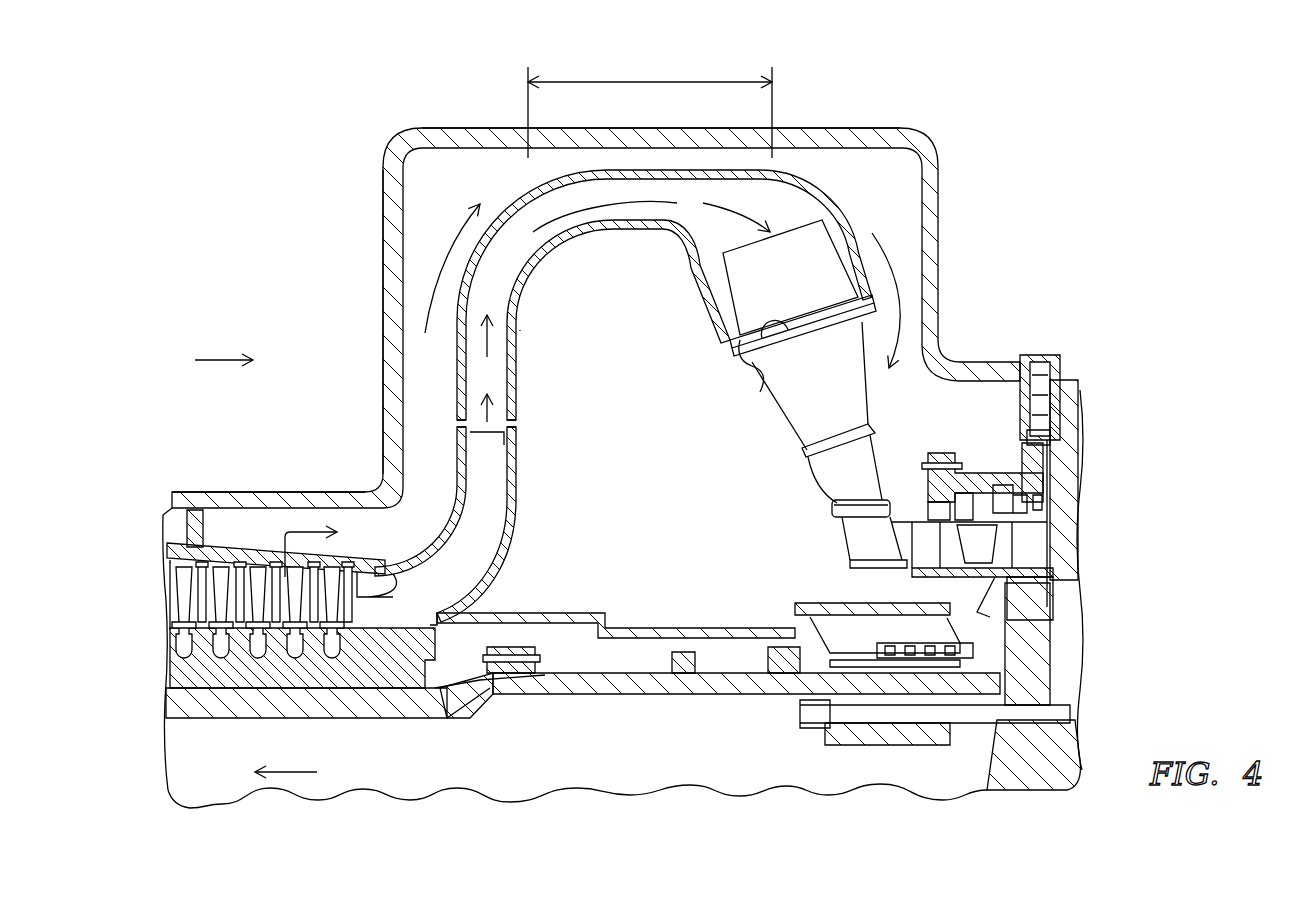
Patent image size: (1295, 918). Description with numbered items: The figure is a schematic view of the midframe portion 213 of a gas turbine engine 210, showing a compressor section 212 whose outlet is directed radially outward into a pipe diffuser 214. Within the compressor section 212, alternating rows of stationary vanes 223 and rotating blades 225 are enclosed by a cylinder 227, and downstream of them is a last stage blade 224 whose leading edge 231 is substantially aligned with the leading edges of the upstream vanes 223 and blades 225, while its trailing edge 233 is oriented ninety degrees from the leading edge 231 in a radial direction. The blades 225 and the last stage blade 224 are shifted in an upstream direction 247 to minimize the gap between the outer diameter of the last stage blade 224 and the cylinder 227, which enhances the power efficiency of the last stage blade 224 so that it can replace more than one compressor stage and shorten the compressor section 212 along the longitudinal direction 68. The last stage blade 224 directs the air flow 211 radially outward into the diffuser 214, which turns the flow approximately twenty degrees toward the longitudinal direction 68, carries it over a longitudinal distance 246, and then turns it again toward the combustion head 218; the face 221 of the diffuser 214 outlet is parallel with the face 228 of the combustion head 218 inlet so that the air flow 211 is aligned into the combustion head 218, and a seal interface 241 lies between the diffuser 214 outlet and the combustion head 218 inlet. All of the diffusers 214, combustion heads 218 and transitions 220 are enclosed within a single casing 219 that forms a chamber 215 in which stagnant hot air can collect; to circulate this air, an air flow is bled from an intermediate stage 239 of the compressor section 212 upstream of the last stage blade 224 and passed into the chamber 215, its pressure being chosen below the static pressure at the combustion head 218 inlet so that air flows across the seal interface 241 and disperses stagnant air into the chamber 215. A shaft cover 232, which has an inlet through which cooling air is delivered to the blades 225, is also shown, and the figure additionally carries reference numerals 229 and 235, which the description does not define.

The longitudinal direction 68 is at (220, 358).
The gas turbine engine 210 is at (1047, 126).
The air flow 211 is at (677, 205).
The compressor section 212 is at (303, 454).
The midframe portion 213 is at (964, 207).
The diffuser 214 is at (534, 200).
The chamber 215 is at (672, 488).
The combustion head 218 is at (798, 290).
The casing 219 is at (383, 181).
The transition 220 is at (834, 400).
The face of the diffuser outlet 221 is at (760, 362).
The stationary vanes 223 is at (203, 604).
The last stage blade 224 is at (487, 496).
The rotating blades 225 is at (183, 600).
The cylinder 227 is at (186, 544).
The face of the combustion head inlet 228 is at (798, 228).
The casing wall 229 is at (292, 493).
The leading edge 231 is at (393, 563).
The shaft cover 232 is at (690, 626).
The trailing edge 233 is at (489, 436).
The duct wall 235 is at (478, 570).
The intermediate stage 239 is at (282, 552).
The seal interface 241 is at (757, 340).
The longitudinal distance 246 is at (651, 80).
The upstream direction 247 is at (297, 770).